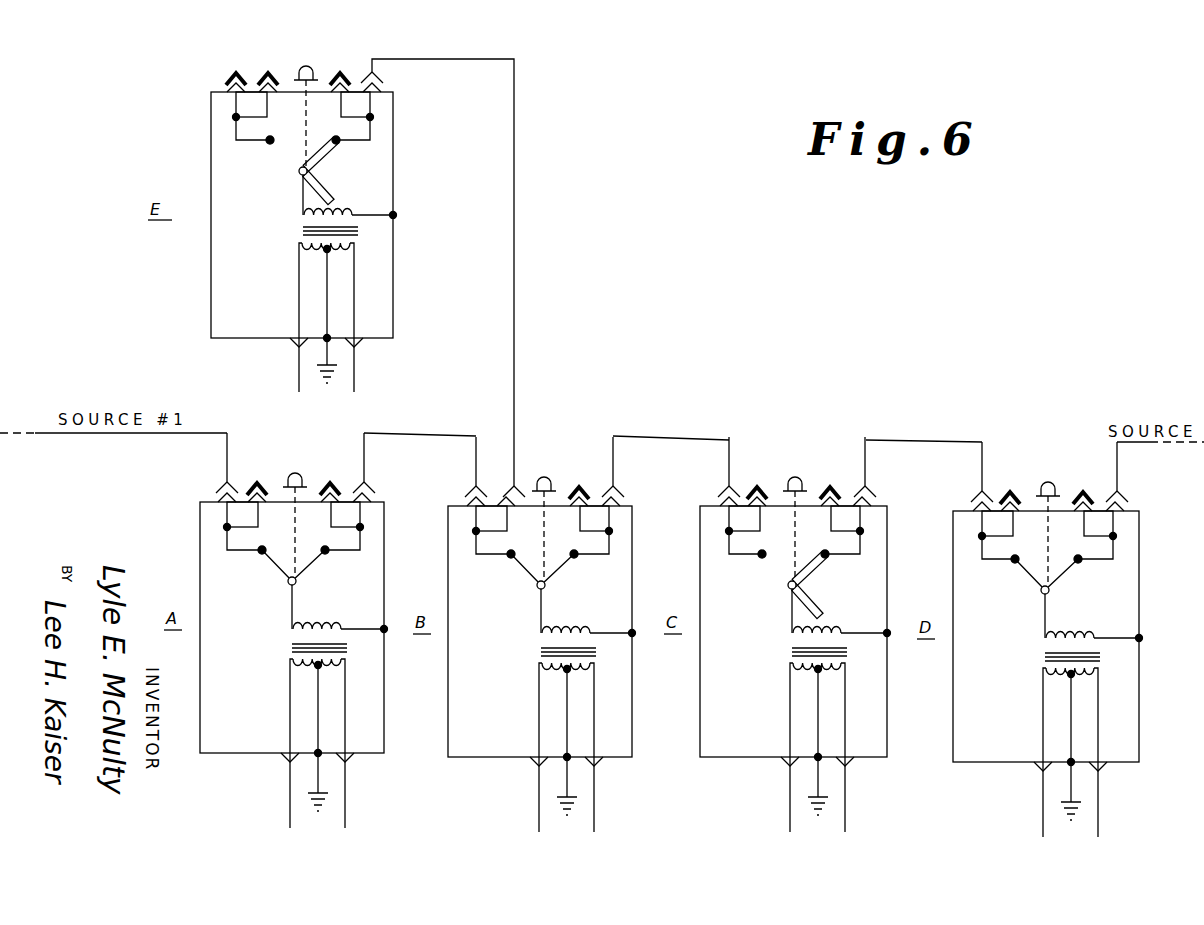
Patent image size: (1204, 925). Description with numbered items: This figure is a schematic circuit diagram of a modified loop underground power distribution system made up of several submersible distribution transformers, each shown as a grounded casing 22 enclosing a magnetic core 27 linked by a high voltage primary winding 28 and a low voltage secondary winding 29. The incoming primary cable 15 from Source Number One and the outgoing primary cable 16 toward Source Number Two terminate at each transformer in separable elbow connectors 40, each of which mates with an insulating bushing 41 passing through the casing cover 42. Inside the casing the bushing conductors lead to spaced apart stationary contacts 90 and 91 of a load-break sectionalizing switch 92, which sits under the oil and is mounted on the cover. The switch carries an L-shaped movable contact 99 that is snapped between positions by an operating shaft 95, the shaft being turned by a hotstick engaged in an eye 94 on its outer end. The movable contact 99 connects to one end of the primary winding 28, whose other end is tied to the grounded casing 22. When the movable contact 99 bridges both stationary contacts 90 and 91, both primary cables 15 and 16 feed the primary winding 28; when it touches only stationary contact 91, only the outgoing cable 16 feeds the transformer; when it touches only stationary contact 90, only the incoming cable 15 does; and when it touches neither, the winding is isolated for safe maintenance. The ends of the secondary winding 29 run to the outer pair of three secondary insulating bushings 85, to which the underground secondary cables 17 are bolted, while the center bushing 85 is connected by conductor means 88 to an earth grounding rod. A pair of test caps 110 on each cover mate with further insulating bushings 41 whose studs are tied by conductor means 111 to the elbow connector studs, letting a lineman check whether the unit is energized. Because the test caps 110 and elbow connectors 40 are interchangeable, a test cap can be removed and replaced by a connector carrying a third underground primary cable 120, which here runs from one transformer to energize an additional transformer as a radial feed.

The incoming primary cable 15 is at (227, 452).
The outgoing primary cable 16 is at (364, 452).
The underground secondary cables 17 is at (290, 803).
The casing 22 is at (200, 680).
The magnetic core 27 is at (349, 648).
The primary winding 28 is at (293, 629).
The secondary winding 29 is at (293, 659).
The separable elbow connectors 40 is at (219, 490).
The insulating bushing 41 is at (293, 514).
The casing cover 42 is at (200, 502).
The secondary insulating bushings 85 is at (283, 757).
The conductor means 88 is at (311, 737).
The stationary contact 90 is at (259, 554).
The stationary contact 91 is at (328, 554).
The load-break sectionalizing switch 92 is at (280, 582).
The eye 94 is at (297, 472).
The operating shaft 95 is at (294, 560).
The movable contact 99 is at (311, 565).
The test caps 110 is at (257, 481).
The conductor means 111 is at (258, 527).
The third underground primary cable 120 is at (513, 243).